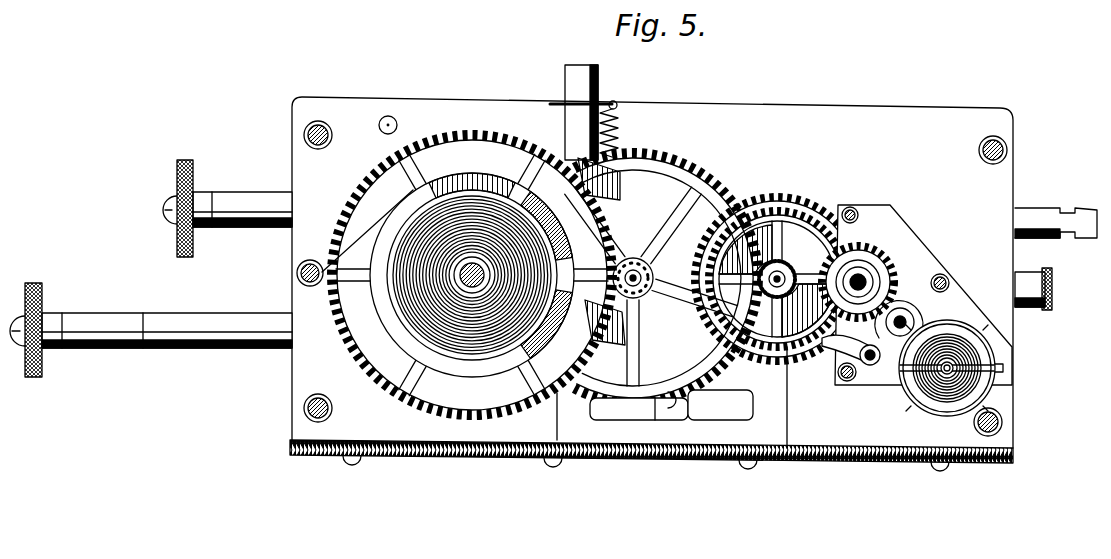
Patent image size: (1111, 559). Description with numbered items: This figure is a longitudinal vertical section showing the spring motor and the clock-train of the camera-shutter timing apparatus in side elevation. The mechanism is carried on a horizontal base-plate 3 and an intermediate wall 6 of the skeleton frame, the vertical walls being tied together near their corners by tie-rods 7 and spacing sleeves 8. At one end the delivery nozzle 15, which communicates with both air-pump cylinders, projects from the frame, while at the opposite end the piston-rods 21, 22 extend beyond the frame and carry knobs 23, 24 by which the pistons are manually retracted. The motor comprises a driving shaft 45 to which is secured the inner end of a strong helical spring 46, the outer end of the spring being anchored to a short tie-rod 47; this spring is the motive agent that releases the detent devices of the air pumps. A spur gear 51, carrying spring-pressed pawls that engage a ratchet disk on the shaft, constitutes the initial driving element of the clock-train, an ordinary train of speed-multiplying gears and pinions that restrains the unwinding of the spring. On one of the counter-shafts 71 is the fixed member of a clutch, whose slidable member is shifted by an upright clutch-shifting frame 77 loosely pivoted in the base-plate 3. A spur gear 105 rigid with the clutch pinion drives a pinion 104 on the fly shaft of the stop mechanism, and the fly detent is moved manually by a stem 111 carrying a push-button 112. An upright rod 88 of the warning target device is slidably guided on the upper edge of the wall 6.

The base-plate 3 is at (640, 458).
The intermediate wall 6 is at (812, 110).
The tie-rod 7 is at (985, 140).
The spacing sleeve 8 is at (1005, 145).
The delivery nozzle 15 is at (1031, 215).
The piston-rod 21 is at (234, 197).
The piston-rod 22 is at (197, 324).
The knob 23 is at (197, 162).
The knob 24 is at (42, 284).
The driving shaft 45 is at (465, 278).
The helical spring 46 is at (478, 350).
The tie-rod 47 is at (298, 277).
The spur gear 51 is at (493, 138).
The counter-shaft 71 is at (779, 279).
The clutch-shifting frame 77 is at (706, 430).
The upright rod or tube 88 is at (578, 70).
The pinion 104 is at (880, 265).
The spur gear 105 is at (783, 191).
The horizontal stem 111 is at (1025, 282).
The push-button 112 is at (1053, 295).